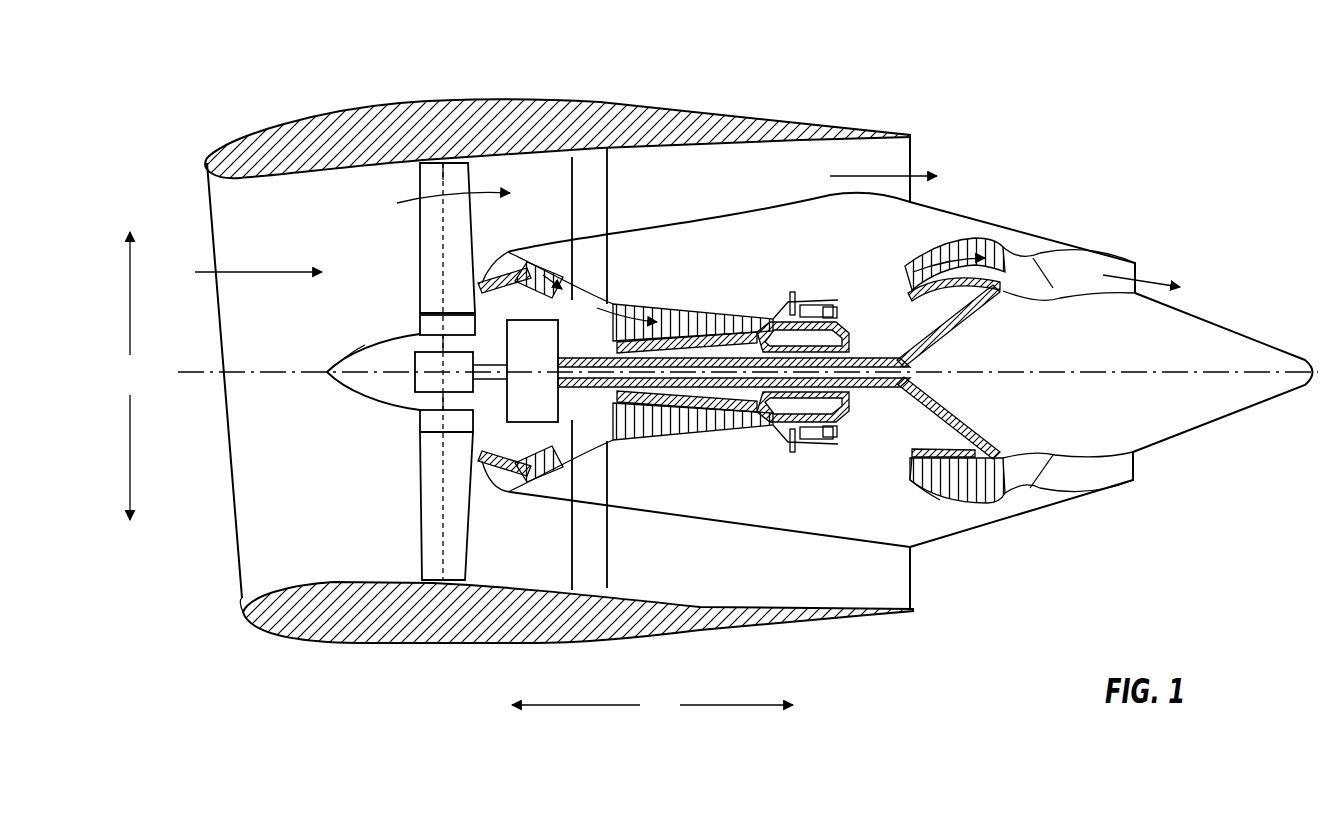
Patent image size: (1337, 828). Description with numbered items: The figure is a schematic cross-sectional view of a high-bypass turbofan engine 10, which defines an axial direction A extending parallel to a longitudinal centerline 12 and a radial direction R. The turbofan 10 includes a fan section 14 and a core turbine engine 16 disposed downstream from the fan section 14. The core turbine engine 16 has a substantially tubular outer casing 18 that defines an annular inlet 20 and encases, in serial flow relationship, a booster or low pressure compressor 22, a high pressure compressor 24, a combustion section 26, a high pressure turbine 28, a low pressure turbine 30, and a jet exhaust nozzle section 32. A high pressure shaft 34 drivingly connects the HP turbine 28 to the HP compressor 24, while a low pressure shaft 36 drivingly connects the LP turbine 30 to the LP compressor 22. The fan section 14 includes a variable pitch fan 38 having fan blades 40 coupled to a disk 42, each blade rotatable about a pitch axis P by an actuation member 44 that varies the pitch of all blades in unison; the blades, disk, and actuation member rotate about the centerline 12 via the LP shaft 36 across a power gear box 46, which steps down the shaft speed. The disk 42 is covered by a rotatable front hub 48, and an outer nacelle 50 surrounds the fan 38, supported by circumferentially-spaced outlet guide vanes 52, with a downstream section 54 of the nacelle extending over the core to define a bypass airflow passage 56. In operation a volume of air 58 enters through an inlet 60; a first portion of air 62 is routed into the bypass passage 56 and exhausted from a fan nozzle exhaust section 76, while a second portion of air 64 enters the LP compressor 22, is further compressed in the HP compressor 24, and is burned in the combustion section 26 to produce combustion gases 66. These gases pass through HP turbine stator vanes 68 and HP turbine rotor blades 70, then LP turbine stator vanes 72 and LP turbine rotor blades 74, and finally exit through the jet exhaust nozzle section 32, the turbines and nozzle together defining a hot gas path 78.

The turbofan engine 10 is at (1055, 110).
The longitudinal centerline 12 is at (1077, 370).
The fan section 14 is at (378, 188).
The core turbine engine 16 is at (728, 246).
The outer casing 18 is at (767, 537).
The annular inlet 20 is at (515, 480).
The low pressure compressor 22 is at (563, 456).
The high pressure compressor 24 is at (637, 428).
The combustion section 26 is at (810, 437).
The high pressure turbine 28 is at (870, 445).
The low pressure turbine 30 is at (991, 500).
The jet exhaust nozzle section 32 is at (1053, 481).
The high pressure shaft 34 is at (815, 340).
The low pressure shaft 36 is at (923, 340).
The variable pitch fan 38 is at (381, 427).
The fan blades 40 is at (415, 523).
The disk 42 is at (437, 327).
The actuation member 44 is at (420, 357).
The power gear box 46 is at (542, 338).
The front hub 48 is at (327, 372).
The outer nacelle 50 is at (463, 650).
The outlet guide vanes 52 is at (607, 184).
The downstream section 54 is at (857, 126).
The bypass airflow passage 56 is at (757, 190).
The volume of air 58 is at (258, 257).
The inlet 60 is at (235, 587).
The first portion of air 62 is at (433, 218).
The second portion of air 64 is at (497, 265).
The combustion gases 66 is at (947, 243).
The HP turbine stator vanes 68 is at (821, 432).
The HP turbine rotor blades 70 is at (843, 433).
The LP turbine stator vanes 72 is at (913, 482).
The LP turbine rotor blades 74 is at (927, 488).
The fan nozzle exhaust section 76 is at (903, 160).
The hot gas path 78 is at (896, 276).
The pitch axis P is at (450, 177).
The radial direction R is at (130, 376).
The axial direction A is at (652, 705).